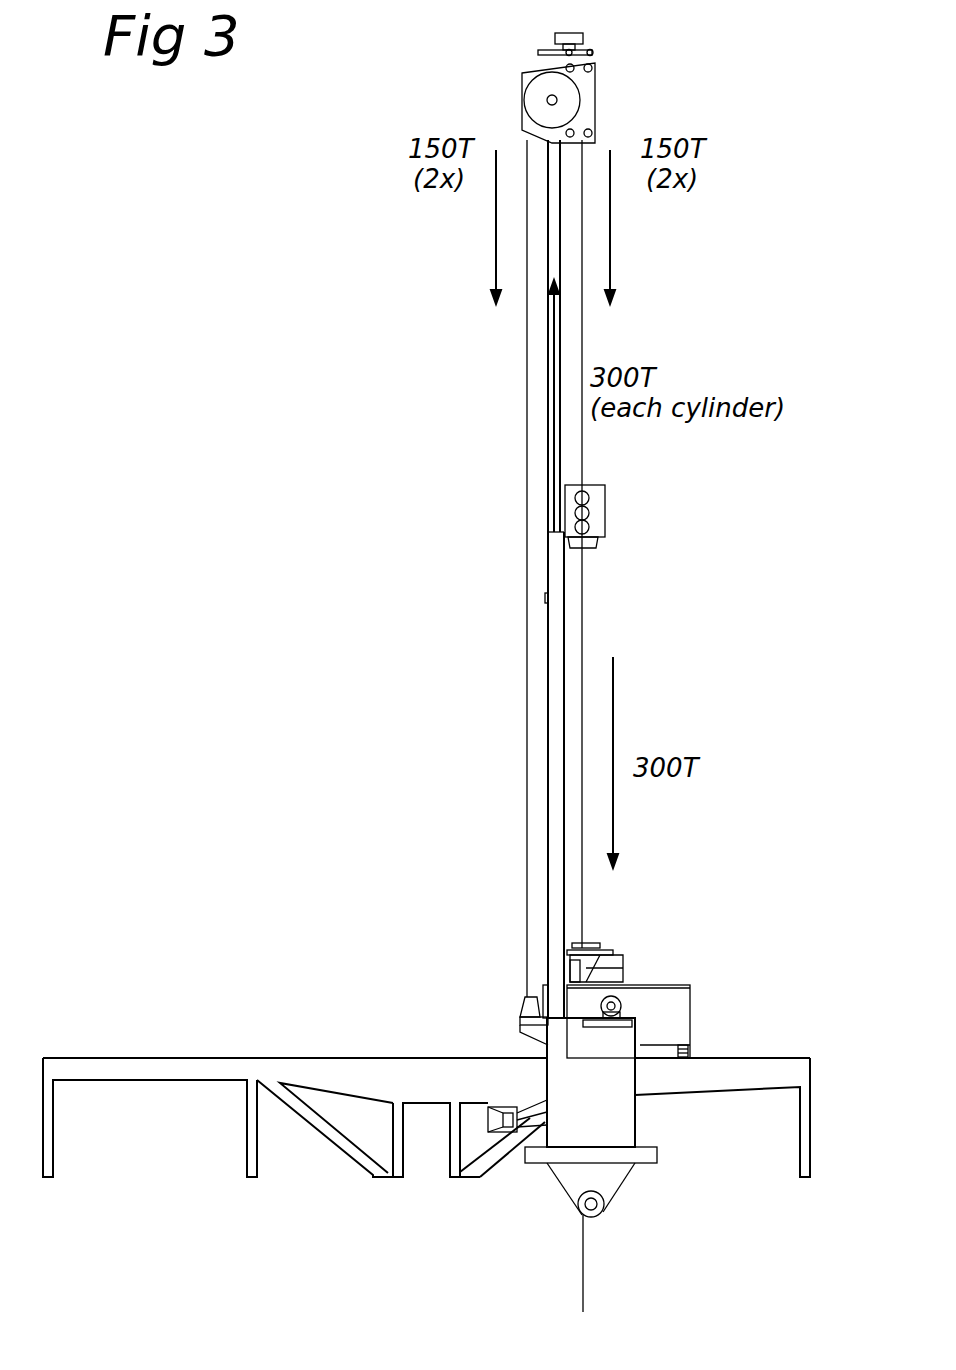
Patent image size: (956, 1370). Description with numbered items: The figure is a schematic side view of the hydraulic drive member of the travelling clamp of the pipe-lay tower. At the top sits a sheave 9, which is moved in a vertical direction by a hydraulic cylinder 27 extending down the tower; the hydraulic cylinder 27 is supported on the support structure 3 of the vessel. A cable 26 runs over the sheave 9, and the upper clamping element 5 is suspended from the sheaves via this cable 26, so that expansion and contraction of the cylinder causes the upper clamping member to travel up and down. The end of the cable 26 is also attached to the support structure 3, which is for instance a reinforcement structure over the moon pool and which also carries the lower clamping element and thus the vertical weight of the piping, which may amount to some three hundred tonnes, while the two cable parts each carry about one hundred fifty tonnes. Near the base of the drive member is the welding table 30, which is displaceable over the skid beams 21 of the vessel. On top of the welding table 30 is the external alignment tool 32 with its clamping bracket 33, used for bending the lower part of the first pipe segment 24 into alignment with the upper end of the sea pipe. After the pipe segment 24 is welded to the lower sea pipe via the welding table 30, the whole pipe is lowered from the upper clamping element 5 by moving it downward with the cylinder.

The vessel support structure 3 is at (603, 1115).
The upper clamping element 5 is at (582, 498).
The sheave 9 is at (568, 93).
The skid beams 21 is at (770, 1072).
The first pipe segment 24 is at (583, 613).
The cable 26 is at (528, 780).
The hydraulic cylinder 27 is at (556, 668).
The welding table 30 is at (680, 1005).
The external alignment tool 32 is at (610, 960).
The clamping bracket 33 is at (583, 1288).